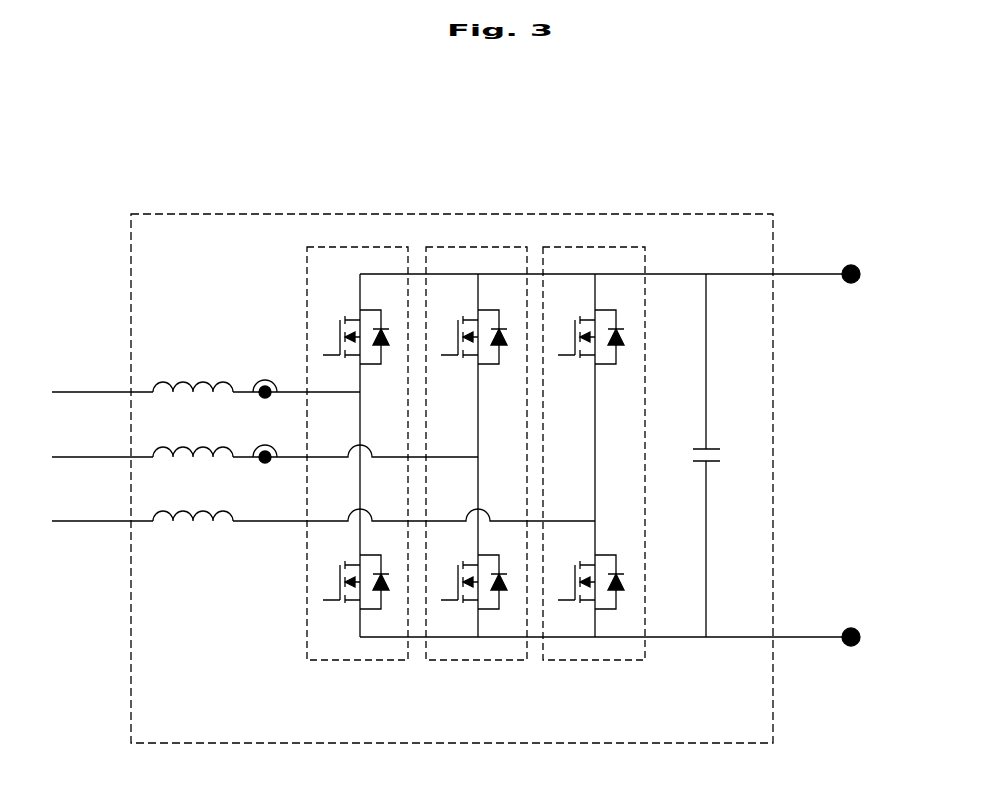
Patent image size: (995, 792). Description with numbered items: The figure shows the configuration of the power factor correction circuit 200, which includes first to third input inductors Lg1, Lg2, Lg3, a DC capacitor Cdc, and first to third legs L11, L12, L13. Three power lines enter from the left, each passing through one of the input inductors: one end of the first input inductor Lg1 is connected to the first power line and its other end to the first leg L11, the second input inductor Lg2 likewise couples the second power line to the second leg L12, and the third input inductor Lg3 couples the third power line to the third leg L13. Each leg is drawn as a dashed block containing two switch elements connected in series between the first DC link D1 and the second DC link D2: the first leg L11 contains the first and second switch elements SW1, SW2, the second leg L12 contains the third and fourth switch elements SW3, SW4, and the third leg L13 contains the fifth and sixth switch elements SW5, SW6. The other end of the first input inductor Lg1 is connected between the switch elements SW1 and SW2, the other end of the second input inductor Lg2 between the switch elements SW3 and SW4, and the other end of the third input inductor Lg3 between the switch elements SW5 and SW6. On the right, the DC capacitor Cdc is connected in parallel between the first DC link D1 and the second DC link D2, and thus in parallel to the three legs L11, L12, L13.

The power factor correction circuit 200 is at (220, 214).
The first input inductor Lg1 is at (193, 370).
The second input inductor Lg2 is at (193, 435).
The third input inductor Lg3 is at (193, 499).
The first leg L11 is at (360, 660).
The second leg L12 is at (476, 660).
The third leg L13 is at (594, 660).
The first switch element SW1 is at (351, 328).
The second switch element SW2 is at (351, 573).
The third switch element SW3 is at (469, 328).
The fourth switch element SW4 is at (469, 573).
The fifth switch element SW5 is at (586, 328).
The sixth switch element SW6 is at (586, 573).
The DC capacitor Cdc is at (720, 455).
The first DC link D1 is at (851, 264).
The second DC link D2 is at (851, 627).